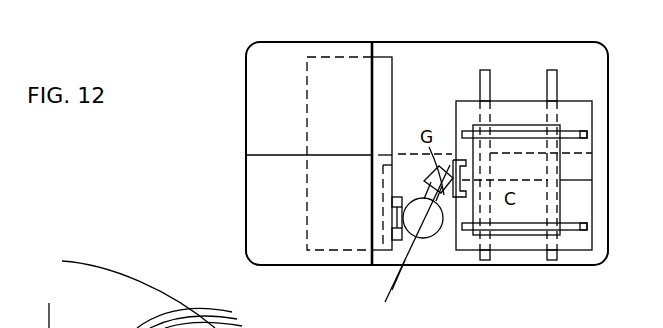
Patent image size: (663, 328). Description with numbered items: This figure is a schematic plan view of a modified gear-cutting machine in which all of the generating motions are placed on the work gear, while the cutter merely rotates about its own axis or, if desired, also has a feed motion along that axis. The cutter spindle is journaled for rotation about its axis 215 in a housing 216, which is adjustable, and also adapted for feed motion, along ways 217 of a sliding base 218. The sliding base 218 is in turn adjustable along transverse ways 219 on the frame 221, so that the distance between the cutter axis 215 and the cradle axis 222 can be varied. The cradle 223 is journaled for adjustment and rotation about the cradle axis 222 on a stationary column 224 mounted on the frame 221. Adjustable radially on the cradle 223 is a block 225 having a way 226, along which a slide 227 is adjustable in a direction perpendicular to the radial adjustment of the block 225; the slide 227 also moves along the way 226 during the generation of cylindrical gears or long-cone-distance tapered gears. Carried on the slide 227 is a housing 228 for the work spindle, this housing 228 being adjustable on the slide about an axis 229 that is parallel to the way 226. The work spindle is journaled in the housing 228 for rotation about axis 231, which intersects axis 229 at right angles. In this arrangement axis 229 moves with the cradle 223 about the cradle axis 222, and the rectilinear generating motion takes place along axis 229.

The cutter spindle axis 215 is at (577, 181).
The housing 216 is at (540, 210).
The ways 217 is at (587, 135).
The sliding base 218 is at (527, 122).
The transverse ways 219 is at (549, 78).
The frame 221 is at (443, 72).
The cradle axis 222 is at (281, 155).
The cradle 223 is at (376, 60).
The stationary column 224 is at (345, 259).
The block 225 is at (392, 203).
The way 226 is at (400, 222).
The slide 227 is at (407, 237).
The work spindle housing 228 is at (417, 197).
The work housing adjustment axis 229 is at (432, 233).
The work spindle axis 231 is at (392, 290).